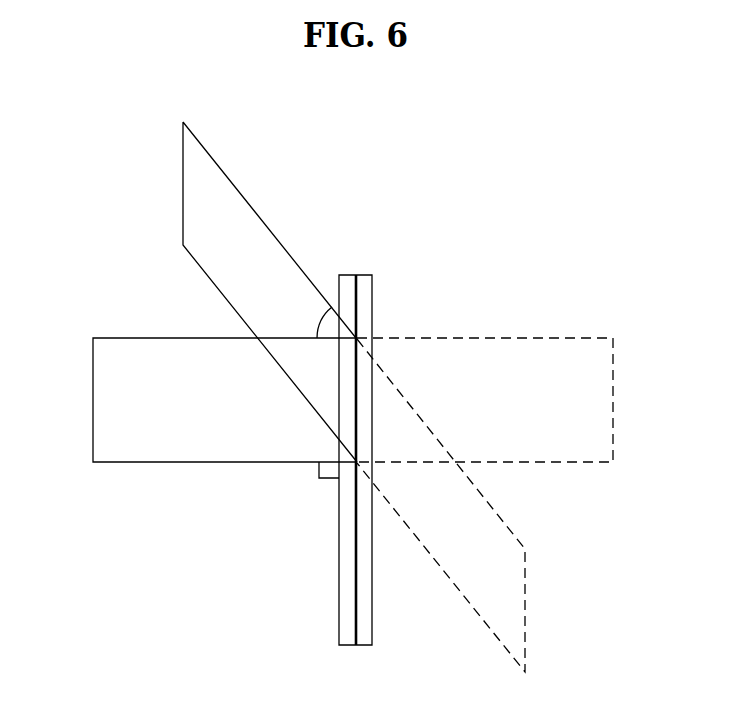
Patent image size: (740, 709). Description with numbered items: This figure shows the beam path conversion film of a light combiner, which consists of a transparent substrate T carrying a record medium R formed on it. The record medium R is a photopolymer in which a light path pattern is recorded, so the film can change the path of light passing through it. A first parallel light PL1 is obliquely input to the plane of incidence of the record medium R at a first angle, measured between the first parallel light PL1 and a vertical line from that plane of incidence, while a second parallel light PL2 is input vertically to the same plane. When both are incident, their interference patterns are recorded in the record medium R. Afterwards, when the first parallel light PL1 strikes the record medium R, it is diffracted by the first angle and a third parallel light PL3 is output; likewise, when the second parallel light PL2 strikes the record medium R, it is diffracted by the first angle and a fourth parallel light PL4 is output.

The first parallel light PL1 is at (188, 192).
The second parallel light PL2 is at (102, 406).
The third parallel light PL3 is at (605, 407).
The fourth parallel light PL4 is at (517, 603).
The record medium R is at (350, 275).
The transparent substrate T is at (363, 275).